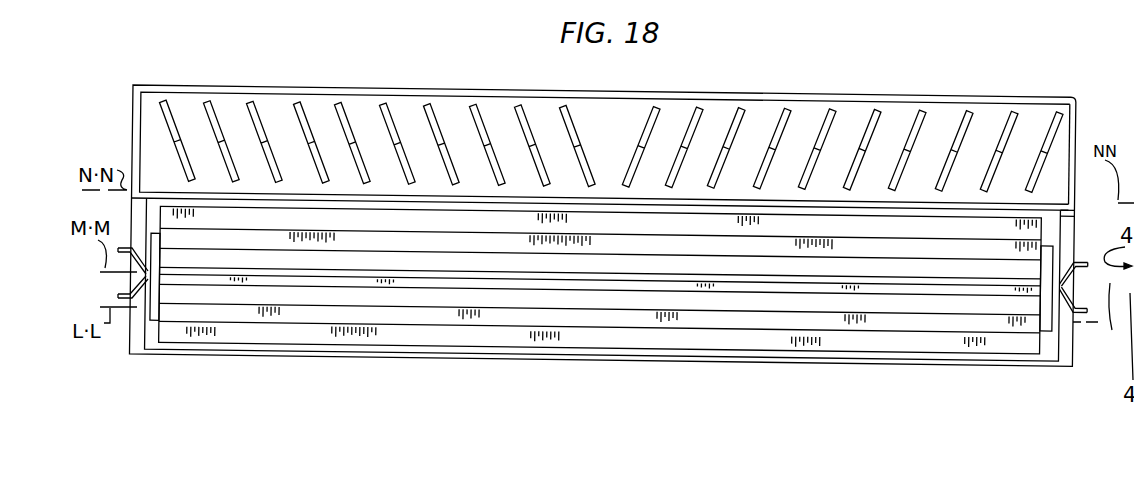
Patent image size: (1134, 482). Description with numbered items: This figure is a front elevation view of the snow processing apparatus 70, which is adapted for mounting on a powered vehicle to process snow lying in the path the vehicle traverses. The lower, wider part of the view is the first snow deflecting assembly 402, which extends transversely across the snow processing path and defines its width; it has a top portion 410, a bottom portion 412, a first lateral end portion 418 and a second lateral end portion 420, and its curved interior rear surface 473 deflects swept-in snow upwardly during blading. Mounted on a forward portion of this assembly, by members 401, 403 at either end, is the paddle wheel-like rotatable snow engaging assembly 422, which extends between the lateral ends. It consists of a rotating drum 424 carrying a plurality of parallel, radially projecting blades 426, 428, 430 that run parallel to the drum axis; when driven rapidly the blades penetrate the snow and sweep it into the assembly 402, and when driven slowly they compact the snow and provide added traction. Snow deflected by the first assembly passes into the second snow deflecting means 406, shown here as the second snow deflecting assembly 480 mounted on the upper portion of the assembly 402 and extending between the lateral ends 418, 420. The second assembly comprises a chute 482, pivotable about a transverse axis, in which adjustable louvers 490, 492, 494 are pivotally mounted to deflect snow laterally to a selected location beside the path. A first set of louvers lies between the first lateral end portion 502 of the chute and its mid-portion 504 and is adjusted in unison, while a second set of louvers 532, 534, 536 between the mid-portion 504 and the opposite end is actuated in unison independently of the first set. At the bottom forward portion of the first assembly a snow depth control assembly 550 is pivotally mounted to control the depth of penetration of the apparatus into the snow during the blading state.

The snow processing apparatus 70 is at (388, 78).
The first lateral end portion 418 is at (133, 338).
The curved interior rear surface 473 is at (153, 335).
The second snow deflecting assembly 480 is at (782, 97).
The second snow deflecting means 406 is at (1077, 131).
The first lateral end portion of the chute 502 is at (1077, 150).
The top portion 410 is at (1074, 216).
The first snow deflecting assembly 402 is at (1062, 249).
The rotatable snow engaging assembly 422 is at (164, 196).
The rotating drum 424 is at (261, 282).
The radially projecting blade 428 is at (893, 250).
The radially projecting blade 430 is at (890, 282).
The radially projecting blade 426 is at (997, 227).
The second lateral end portion 420 is at (1075, 331).
The snow depth control assembly 550 is at (705, 362).
The bottom portion 412 is at (1068, 360).
The mounting member 403 is at (122, 288).
The mounting member 401 is at (1087, 287).
The louver of second set 536 is at (475, 110).
The louver of second set 534 is at (518, 108).
The louver of second set 532 is at (565, 107).
The mid-portion of the chute 504 is at (627, 113).
The chute 482 is at (677, 117).
The adjustable louver 494 is at (963, 122).
The adjustable louver 492 is at (1008, 120).
The adjustable louver 490 is at (1050, 120).